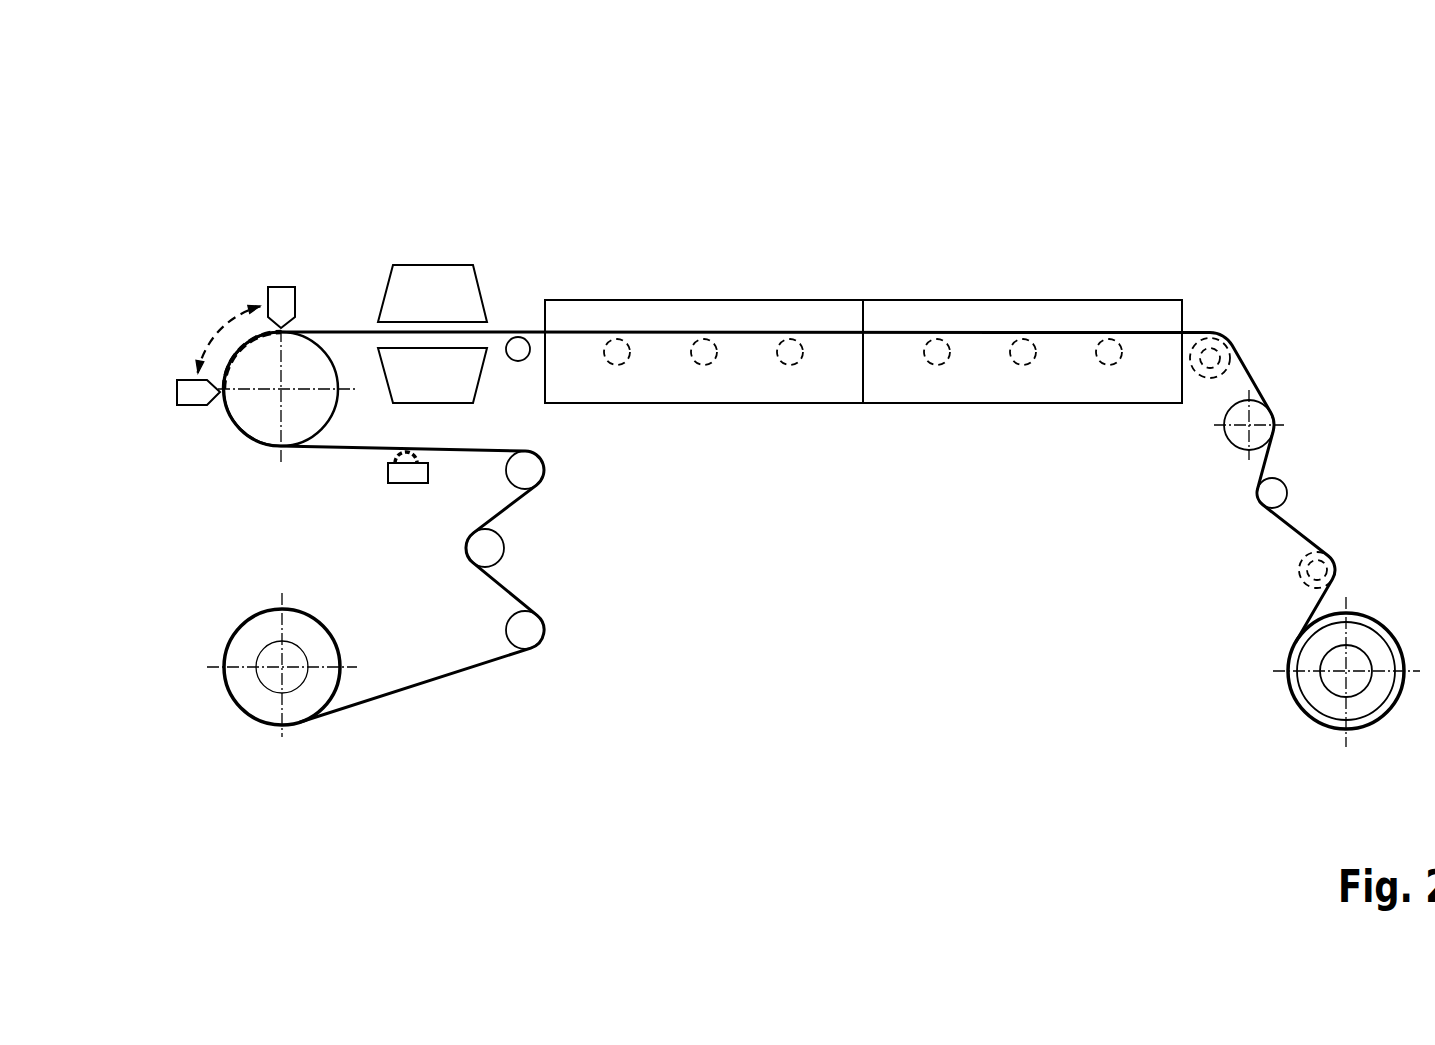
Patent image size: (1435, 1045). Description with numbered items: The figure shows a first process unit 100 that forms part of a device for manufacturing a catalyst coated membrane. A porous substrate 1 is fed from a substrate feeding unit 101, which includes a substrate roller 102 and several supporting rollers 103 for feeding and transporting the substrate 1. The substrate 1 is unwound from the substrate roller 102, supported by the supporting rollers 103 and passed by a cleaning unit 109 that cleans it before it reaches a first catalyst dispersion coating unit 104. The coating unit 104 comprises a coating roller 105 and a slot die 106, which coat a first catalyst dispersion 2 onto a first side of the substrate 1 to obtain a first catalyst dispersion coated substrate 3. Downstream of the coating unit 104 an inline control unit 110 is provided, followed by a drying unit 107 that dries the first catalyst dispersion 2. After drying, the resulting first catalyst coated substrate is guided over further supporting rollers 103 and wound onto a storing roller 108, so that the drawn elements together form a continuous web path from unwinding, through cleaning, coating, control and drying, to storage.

The substrate 1 is at (485, 668).
The first catalyst dispersion 2 is at (221, 348).
The first catalyst dispersion coated substrate 3 is at (1270, 360).
The first process unit 100 is at (817, 158).
The substrate feeding unit 101 is at (439, 707).
The substrate roller 102 is at (245, 690).
The supporting rollers 103 is at (527, 472).
The first catalyst dispersion coating unit 104 is at (191, 274).
The coating roller 105 is at (257, 417).
The slot die 106 is at (274, 269).
The drying unit 107 is at (862, 275).
The storing roller 108 is at (1284, 713).
The cleaning unit 109 is at (403, 475).
The inline control unit 110 is at (438, 245).